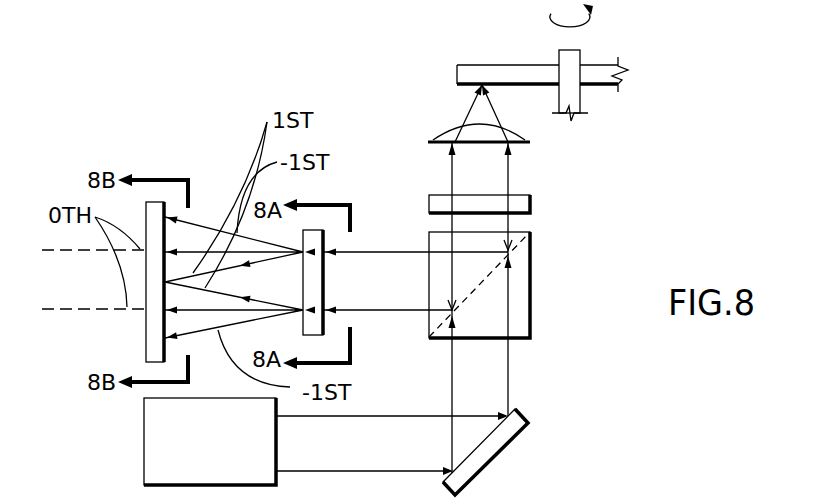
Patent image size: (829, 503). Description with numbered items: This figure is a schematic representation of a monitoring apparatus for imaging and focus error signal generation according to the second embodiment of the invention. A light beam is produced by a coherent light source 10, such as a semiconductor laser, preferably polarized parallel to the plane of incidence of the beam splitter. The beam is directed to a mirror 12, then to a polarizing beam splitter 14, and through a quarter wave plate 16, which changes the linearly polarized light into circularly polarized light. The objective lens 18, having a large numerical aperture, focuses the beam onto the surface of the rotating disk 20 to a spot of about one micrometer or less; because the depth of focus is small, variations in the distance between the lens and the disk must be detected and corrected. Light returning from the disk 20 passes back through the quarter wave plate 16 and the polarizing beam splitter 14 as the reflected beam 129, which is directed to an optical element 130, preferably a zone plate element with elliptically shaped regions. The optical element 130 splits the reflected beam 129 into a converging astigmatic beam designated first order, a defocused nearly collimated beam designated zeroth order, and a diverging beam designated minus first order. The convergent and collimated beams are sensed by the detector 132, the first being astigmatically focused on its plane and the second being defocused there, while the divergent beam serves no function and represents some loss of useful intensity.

The coherent light source 10 is at (223, 456).
The mirror 12 is at (503, 447).
The polarizing beam splitter 14 is at (530, 280).
The quarter wave plate 16 is at (530, 205).
The objective lens 18 is at (530, 143).
The disk 20 is at (503, 63).
The reflected beam 129 is at (417, 252).
The optical element 130 is at (323, 277).
The detector 132 is at (146, 350).